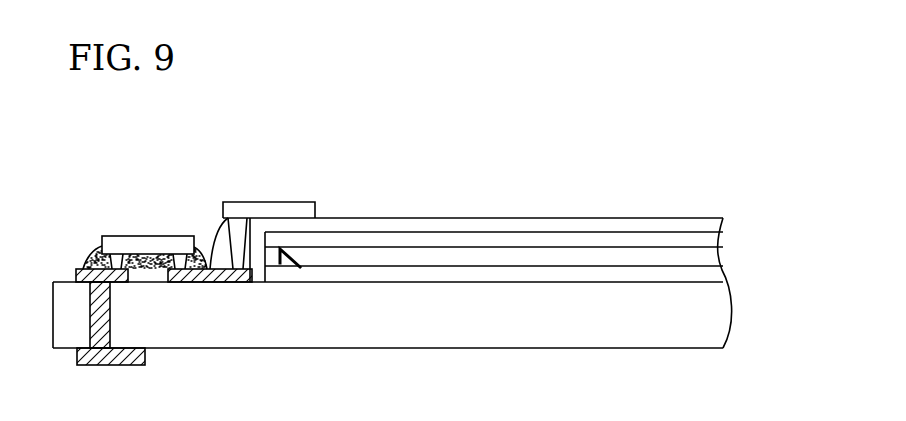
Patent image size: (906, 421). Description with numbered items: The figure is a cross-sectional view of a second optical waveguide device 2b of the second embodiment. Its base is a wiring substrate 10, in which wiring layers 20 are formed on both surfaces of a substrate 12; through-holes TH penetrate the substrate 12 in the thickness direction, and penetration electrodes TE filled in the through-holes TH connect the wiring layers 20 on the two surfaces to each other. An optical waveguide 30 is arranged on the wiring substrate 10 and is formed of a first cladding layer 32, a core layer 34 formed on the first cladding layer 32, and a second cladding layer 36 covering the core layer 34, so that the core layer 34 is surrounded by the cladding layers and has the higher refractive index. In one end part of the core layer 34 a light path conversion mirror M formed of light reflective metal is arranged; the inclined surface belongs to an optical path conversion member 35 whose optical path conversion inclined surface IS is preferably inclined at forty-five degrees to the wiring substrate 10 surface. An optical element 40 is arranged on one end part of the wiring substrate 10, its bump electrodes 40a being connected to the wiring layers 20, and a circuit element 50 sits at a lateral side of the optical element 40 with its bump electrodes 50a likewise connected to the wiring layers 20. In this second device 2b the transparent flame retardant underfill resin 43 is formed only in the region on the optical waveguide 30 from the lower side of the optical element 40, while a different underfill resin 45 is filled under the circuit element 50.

The second optical waveguide device 2b is at (415, 127).
The wiring substrate 10 is at (740, 280).
The substrate 12 is at (697, 340).
The wiring layer 20 is at (76, 274).
The through-hole TH is at (90, 302).
The penetration electrode TE is at (100, 334).
The optical waveguide 30 is at (540, 254).
The first cladding layer 32 is at (714, 272).
The core layer 34 is at (716, 257).
The second cladding layer 36 is at (711, 239).
The optical path conversion member 35 is at (287, 269).
The light path conversion mirror M is at (287, 269).
The optical path conversion inclined surface IS is at (287, 247).
The optical element 40 is at (267, 207).
The bump electrode 40a is at (240, 228).
The flame retardant underfill resin 43 is at (388, 223).
The underfill resin 45 is at (165, 258).
The circuit element 50 is at (137, 243).
The bump electrode 50a is at (113, 258).